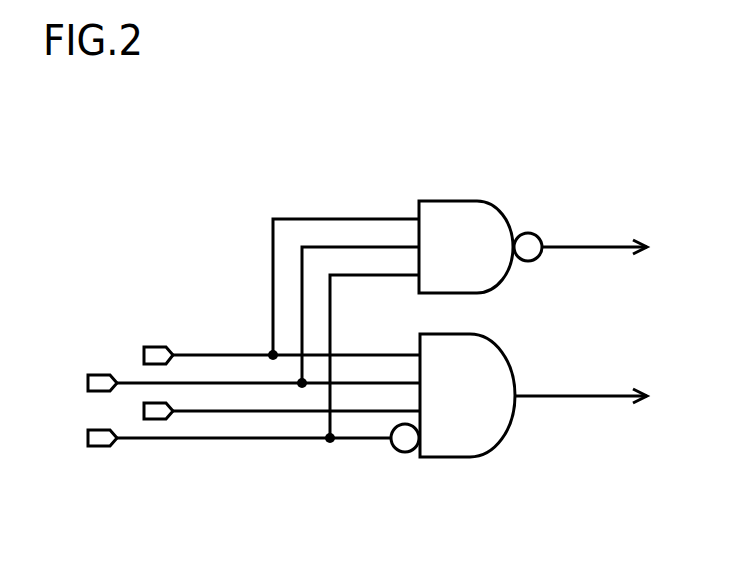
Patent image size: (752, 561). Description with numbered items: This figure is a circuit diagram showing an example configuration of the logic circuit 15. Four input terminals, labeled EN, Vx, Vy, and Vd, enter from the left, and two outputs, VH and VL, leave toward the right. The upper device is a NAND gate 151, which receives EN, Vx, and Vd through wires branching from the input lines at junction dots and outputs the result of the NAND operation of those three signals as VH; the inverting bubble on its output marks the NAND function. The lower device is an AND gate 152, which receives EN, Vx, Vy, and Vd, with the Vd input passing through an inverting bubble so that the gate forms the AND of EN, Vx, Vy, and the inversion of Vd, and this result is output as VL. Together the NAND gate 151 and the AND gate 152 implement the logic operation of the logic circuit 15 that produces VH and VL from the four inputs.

The logic circuit 15 is at (627, 100).
The NAND gate 151 is at (453, 201).
The AND gate 152 is at (453, 458).